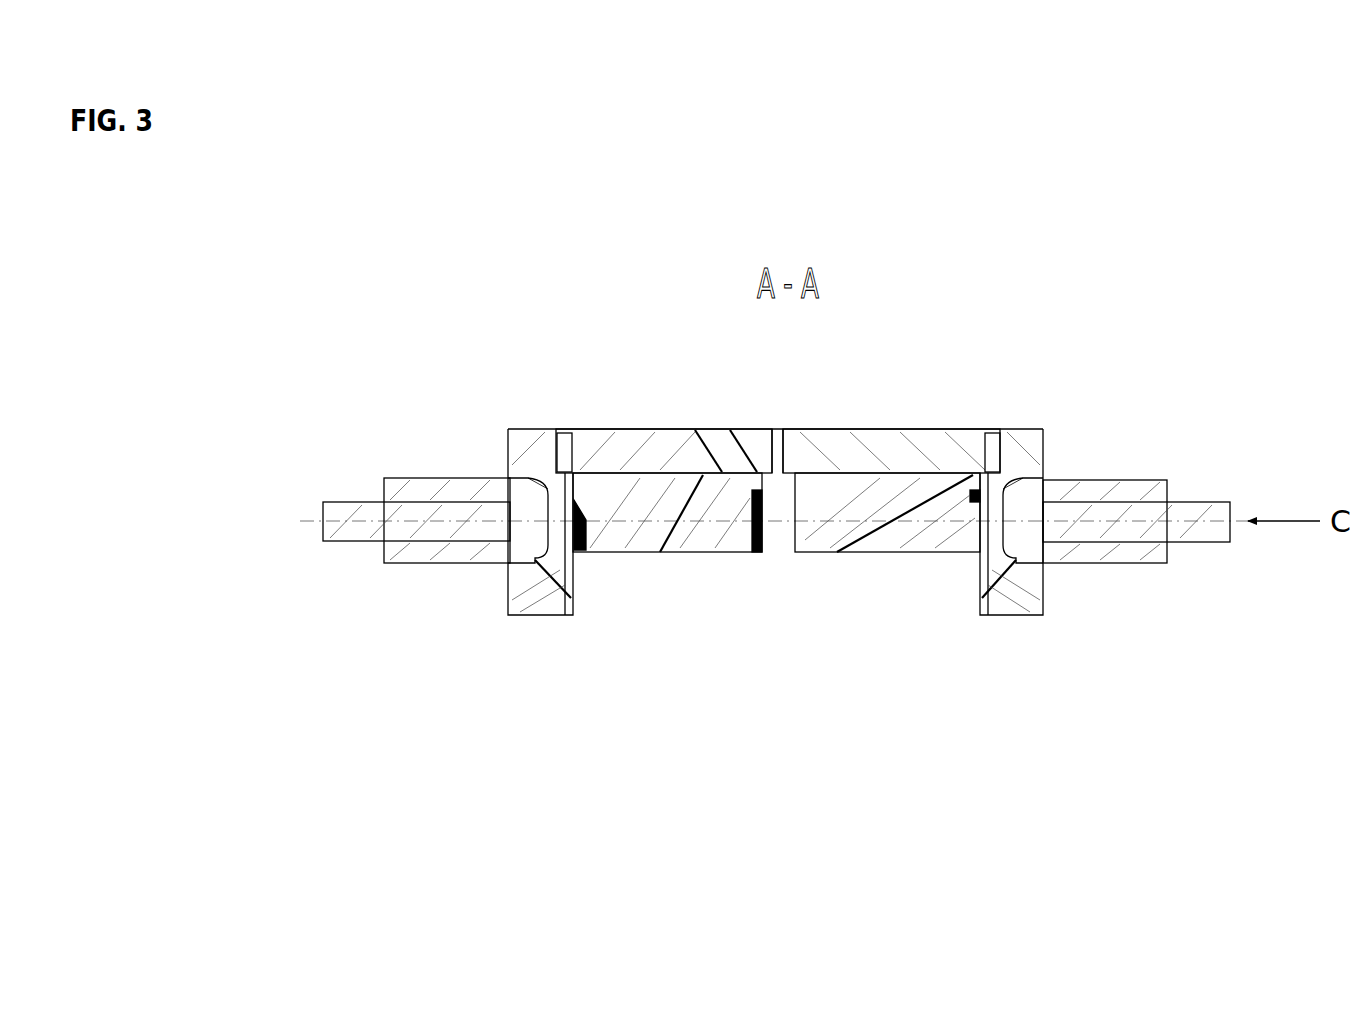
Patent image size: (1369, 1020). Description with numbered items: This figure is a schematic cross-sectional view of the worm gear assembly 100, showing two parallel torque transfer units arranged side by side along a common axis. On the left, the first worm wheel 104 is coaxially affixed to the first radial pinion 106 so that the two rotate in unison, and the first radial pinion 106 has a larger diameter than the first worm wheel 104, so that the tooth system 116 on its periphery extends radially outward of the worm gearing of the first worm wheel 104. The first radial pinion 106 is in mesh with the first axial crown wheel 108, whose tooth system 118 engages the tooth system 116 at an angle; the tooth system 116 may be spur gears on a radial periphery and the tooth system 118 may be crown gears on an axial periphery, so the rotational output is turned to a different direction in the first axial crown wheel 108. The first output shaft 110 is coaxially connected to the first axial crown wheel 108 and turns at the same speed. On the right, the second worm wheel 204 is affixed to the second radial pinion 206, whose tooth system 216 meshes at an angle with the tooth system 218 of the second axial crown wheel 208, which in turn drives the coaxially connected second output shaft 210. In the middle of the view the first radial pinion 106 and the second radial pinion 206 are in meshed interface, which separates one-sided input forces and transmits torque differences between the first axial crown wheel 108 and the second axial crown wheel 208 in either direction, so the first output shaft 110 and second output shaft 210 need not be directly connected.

The worm gear assembly 100 is at (524, 230).
The first worm wheel 104 is at (636, 555).
The first radial pinion 106 is at (704, 430).
The first axial crown wheel 108 is at (510, 612).
The first output shaft 110 is at (357, 548).
The tooth system 116 is at (560, 448).
The tooth system 118 is at (538, 470).
The second worm wheel 204 is at (892, 555).
The second radial pinion 206 is at (836, 430).
The second axial crown wheel 208 is at (1043, 615).
The second output shaft 210 is at (1190, 545).
The tooth system 216 is at (990, 445).
The tooth system 218 is at (1042, 450).